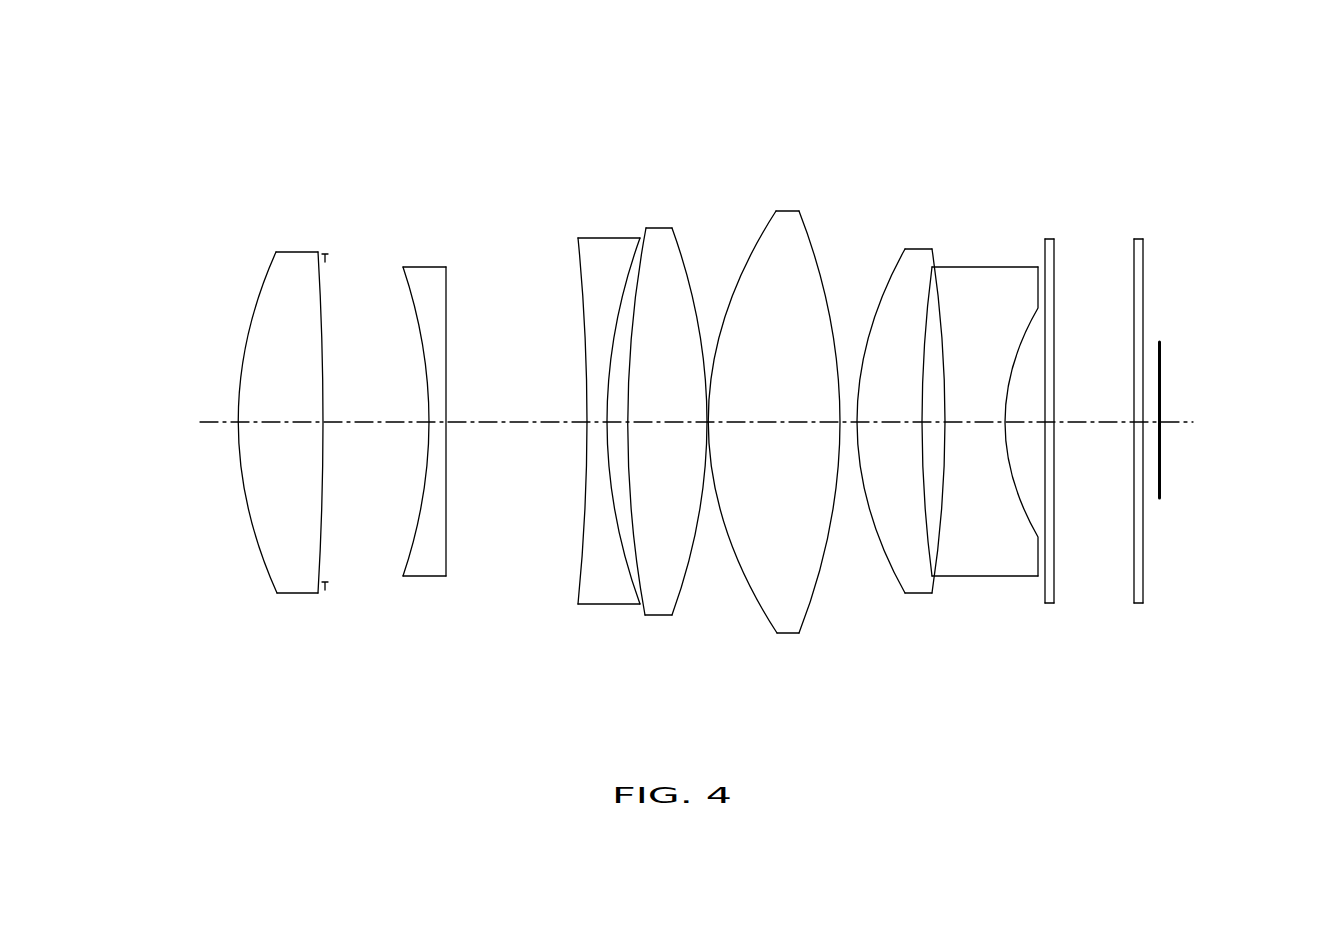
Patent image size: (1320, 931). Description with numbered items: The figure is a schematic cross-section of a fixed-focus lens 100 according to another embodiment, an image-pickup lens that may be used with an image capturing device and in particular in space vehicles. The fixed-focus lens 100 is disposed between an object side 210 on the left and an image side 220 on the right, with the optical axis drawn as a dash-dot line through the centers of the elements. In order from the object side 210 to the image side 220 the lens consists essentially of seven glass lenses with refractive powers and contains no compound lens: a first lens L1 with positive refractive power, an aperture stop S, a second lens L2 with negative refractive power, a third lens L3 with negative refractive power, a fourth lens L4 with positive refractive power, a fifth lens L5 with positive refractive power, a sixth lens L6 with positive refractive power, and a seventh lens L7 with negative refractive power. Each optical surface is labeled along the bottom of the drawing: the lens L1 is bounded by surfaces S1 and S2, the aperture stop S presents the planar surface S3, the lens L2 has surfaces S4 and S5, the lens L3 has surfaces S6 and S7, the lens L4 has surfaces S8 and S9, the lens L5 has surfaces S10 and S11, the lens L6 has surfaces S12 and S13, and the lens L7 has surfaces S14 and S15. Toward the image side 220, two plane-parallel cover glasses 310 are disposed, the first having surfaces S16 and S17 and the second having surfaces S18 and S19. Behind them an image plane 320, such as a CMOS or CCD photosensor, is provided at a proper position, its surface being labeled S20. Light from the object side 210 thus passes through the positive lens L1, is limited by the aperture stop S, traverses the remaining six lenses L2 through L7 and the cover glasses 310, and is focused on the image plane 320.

The fixed-focus lens 100 is at (222, 93).
The object side 210 is at (176, 432).
The image side 220 is at (1272, 433).
The first lens L1 is at (292, 258).
The second lens L2 is at (424, 272).
The third lens L3 is at (610, 243).
The fourth lens L4 is at (662, 232).
The fifth lens L5 is at (788, 217).
The sixth lens L6 is at (918, 255).
The seventh lens L7 is at (980, 273).
The aperture stop S is at (325, 254).
The cover glass 310 is at (1050, 240).
The image plane 320 is at (1162, 357).
The object-side surface of lens L1 S1 is at (267, 573).
The image-side surface of lens L1 S2 is at (318, 552).
The surface of aperture stop S3 is at (325, 583).
The object-side surface of lens L2 S4 is at (408, 557).
The image-side surface of lens L2 S5 is at (447, 547).
The object-side surface of lens L3 S6 is at (580, 550).
The image-side surface of lens L3 S7 is at (630, 563).
The object-side surface of lens L4 S8 is at (643, 587).
The image-side surface of lens L4 S9 is at (672, 603).
The object-side surface of lens L5 S10 is at (747, 595).
The image-side surface of lens L5 S11 is at (810, 600).
The object-side surface of lens L6 S12 is at (893, 573).
The image-side surface of lens L6 S13 is at (930, 555).
The object-side surface of lens L7 S14 is at (938, 535).
The image-side surface of lens L7 S15 is at (1032, 523).
The object-side surface of first cover glass S16 is at (1045, 600).
The image-side surface of first cover glass S17 is at (1055, 588).
The object-side surface of second cover glass S18 is at (1133, 582).
The image-side surface of second cover glass S19 is at (1143, 575).
The surface of image plane S20 is at (1162, 482).